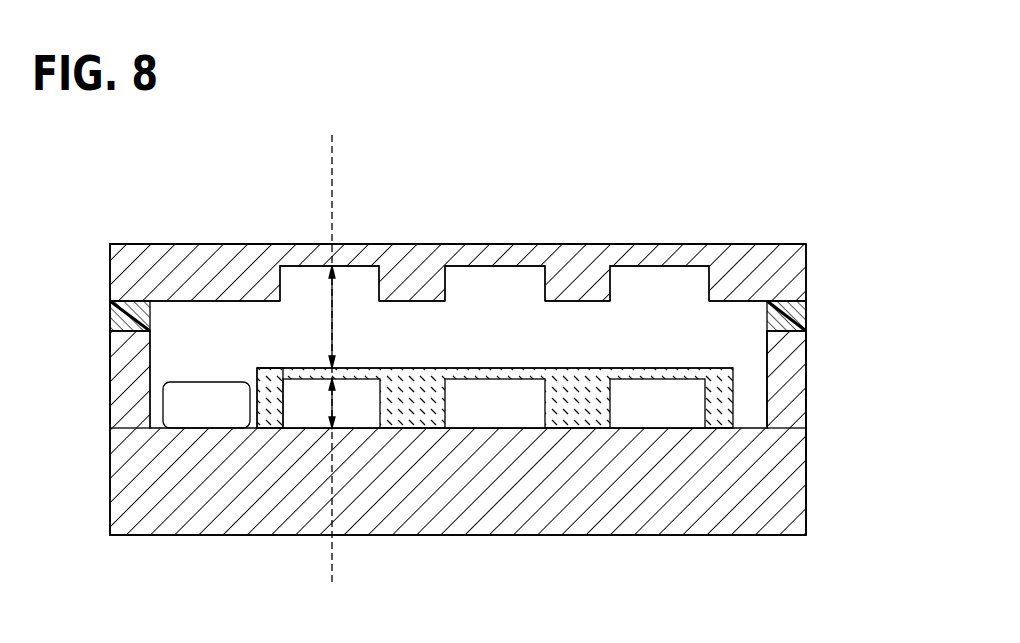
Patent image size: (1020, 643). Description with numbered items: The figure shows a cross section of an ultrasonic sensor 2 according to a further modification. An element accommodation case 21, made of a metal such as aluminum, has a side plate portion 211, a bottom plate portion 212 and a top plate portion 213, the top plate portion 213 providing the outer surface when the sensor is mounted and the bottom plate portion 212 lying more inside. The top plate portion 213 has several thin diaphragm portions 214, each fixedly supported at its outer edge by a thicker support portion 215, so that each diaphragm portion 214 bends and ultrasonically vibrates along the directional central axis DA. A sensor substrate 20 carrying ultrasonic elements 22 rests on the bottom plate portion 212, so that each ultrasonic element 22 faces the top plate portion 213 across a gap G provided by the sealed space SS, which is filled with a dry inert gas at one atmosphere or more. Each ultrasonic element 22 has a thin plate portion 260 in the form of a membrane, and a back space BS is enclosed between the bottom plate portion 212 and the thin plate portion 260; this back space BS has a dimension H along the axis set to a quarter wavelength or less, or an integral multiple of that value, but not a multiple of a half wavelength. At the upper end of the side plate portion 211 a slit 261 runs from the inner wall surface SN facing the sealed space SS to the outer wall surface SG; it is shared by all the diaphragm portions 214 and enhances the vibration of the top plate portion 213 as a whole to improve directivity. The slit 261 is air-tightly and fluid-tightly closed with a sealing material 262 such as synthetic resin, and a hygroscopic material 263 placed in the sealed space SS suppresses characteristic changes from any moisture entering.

The ultrasonic sensor 2 is at (811, 159).
The element accommodation case 21 is at (805, 243).
The side plate portion 211 is at (120, 365).
The bottom plate portion 212 is at (120, 483).
The top plate portion 213 is at (118, 272).
The diaphragm portion 214 is at (352, 243).
The support portion 215 is at (183, 243).
The slit 261 is at (806, 301).
The sealing material 262 is at (806, 318).
The hygroscopic material 263 is at (177, 407).
The sensor substrate 20 is at (733, 369).
The ultrasonic element 22 is at (357, 368).
The thin plate portion 260 is at (297, 372).
The sealed space SS is at (733, 345).
The outer wall surface SG is at (806, 382).
The back space BS is at (762, 418).
The inner wall surface SN is at (768, 424).
The gap G is at (320, 317).
The dimension of back space H is at (320, 403).
The directional central axis DA is at (330, 568).